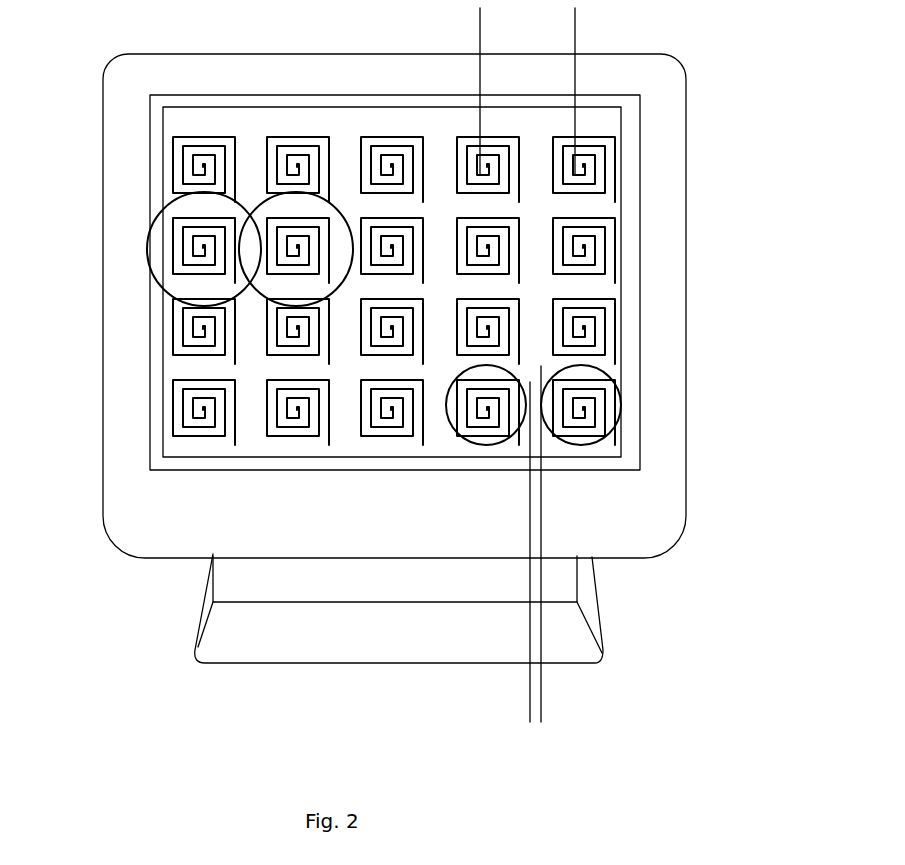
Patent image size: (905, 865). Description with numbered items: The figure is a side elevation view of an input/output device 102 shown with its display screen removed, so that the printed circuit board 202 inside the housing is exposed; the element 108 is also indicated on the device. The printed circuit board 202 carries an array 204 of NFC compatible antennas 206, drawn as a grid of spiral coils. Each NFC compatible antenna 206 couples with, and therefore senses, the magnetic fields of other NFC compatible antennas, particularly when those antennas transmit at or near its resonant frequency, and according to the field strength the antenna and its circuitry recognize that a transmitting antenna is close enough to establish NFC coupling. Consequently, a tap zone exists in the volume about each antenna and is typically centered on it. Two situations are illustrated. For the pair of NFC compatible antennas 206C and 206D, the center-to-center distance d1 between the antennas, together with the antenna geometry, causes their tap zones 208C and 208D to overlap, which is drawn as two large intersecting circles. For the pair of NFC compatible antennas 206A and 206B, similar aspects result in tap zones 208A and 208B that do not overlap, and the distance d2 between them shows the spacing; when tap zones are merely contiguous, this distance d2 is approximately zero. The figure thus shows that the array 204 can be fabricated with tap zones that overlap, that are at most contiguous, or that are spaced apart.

The input/output device 102 is at (143, 53).
The display 108 is at (640, 104).
The printed circuit board 202 is at (209, 457).
The array 204 is at (648, 288).
The NFC compatible antenna 206 is at (297, 137).
The NFC compatible antenna 206A is at (615, 412).
The NFC compatible antenna 206B is at (500, 437).
The NFC compatible antenna 206C is at (173, 274).
The NFC compatible antenna 206D is at (267, 238).
The tap zone 208A is at (617, 387).
The tap zone 208B is at (490, 444).
The tap zone 208C is at (148, 258).
The tap zone 208D is at (263, 200).
The center-to-center distance d1 is at (428, 23).
The distance d2 is at (478, 720).